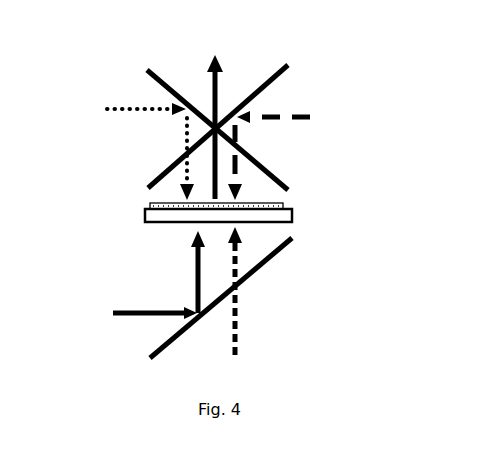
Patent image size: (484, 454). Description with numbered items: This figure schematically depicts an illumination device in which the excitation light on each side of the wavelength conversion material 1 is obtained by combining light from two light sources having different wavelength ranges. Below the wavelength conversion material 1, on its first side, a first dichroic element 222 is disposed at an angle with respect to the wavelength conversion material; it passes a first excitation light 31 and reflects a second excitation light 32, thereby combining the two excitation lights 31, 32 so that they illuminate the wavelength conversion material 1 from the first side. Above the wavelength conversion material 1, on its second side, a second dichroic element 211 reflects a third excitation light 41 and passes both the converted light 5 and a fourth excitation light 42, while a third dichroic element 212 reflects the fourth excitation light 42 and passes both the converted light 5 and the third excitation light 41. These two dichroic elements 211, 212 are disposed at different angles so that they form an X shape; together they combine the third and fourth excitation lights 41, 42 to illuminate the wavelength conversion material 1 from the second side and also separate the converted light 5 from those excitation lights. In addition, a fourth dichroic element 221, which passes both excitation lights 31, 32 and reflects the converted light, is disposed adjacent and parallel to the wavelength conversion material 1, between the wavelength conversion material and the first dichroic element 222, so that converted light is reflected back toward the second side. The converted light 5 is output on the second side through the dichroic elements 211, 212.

The wavelength conversion material 1 is at (276, 182).
The converted light 5 is at (137, 110).
The first excitation light 31 is at (325, 291).
The second excitation light 32 is at (124, 275).
The third excitation light 41 is at (331, 140).
The fourth excitation light 42 is at (110, 135).
The second dichroic element 211 is at (289, 107).
The third dichroic element 212 is at (289, 130).
The fourth dichroic element 221 is at (282, 224).
The first dichroic element 222 is at (290, 298).